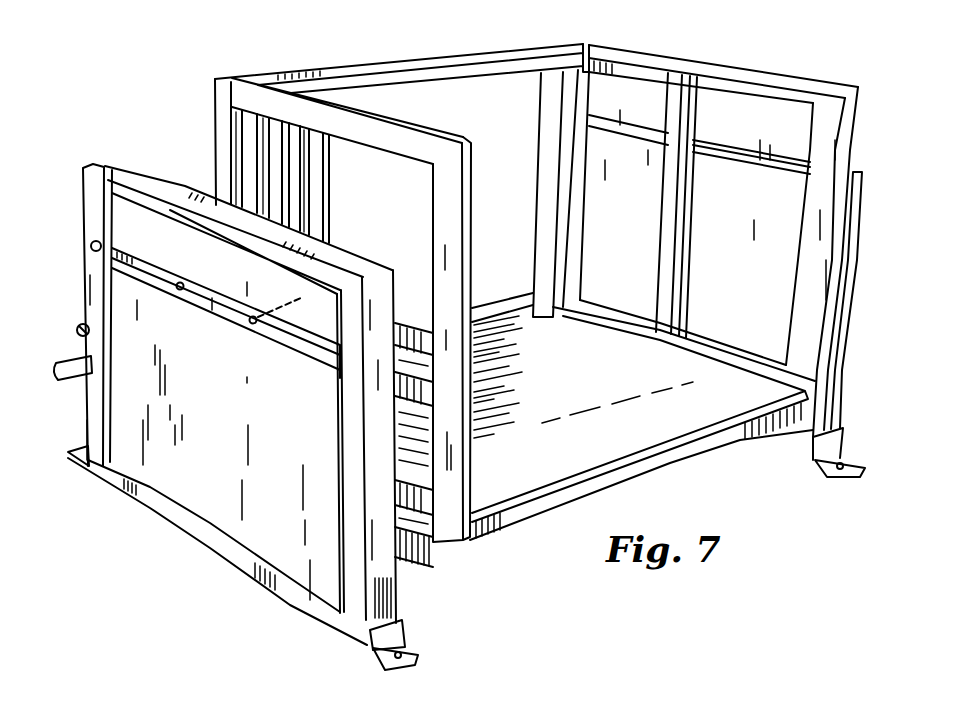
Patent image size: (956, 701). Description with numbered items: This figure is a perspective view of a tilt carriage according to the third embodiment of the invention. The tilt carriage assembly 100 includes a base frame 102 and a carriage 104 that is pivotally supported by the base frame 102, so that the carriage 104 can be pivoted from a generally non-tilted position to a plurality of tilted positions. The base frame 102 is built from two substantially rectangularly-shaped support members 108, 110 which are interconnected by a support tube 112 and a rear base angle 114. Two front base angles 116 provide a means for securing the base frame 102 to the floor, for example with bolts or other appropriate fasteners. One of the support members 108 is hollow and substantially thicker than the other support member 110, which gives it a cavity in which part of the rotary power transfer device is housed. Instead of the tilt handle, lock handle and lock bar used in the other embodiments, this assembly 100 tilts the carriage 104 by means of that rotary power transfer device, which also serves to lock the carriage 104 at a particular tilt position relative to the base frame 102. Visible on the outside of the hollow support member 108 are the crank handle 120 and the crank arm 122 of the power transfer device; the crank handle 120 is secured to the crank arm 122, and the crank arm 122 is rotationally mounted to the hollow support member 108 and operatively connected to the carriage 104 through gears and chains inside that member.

The tilt carriage assembly 100 is at (158, 124).
The base frame 102 is at (300, 607).
The carriage 104 is at (548, 50).
The support member 108 is at (862, 190).
The support member 110 is at (162, 185).
The support tube 112 is at (427, 550).
The rear base angle 114 is at (82, 452).
The front base angles 116 is at (407, 645).
The crank handle 120 is at (72, 376).
The crank arm 122 is at (93, 274).